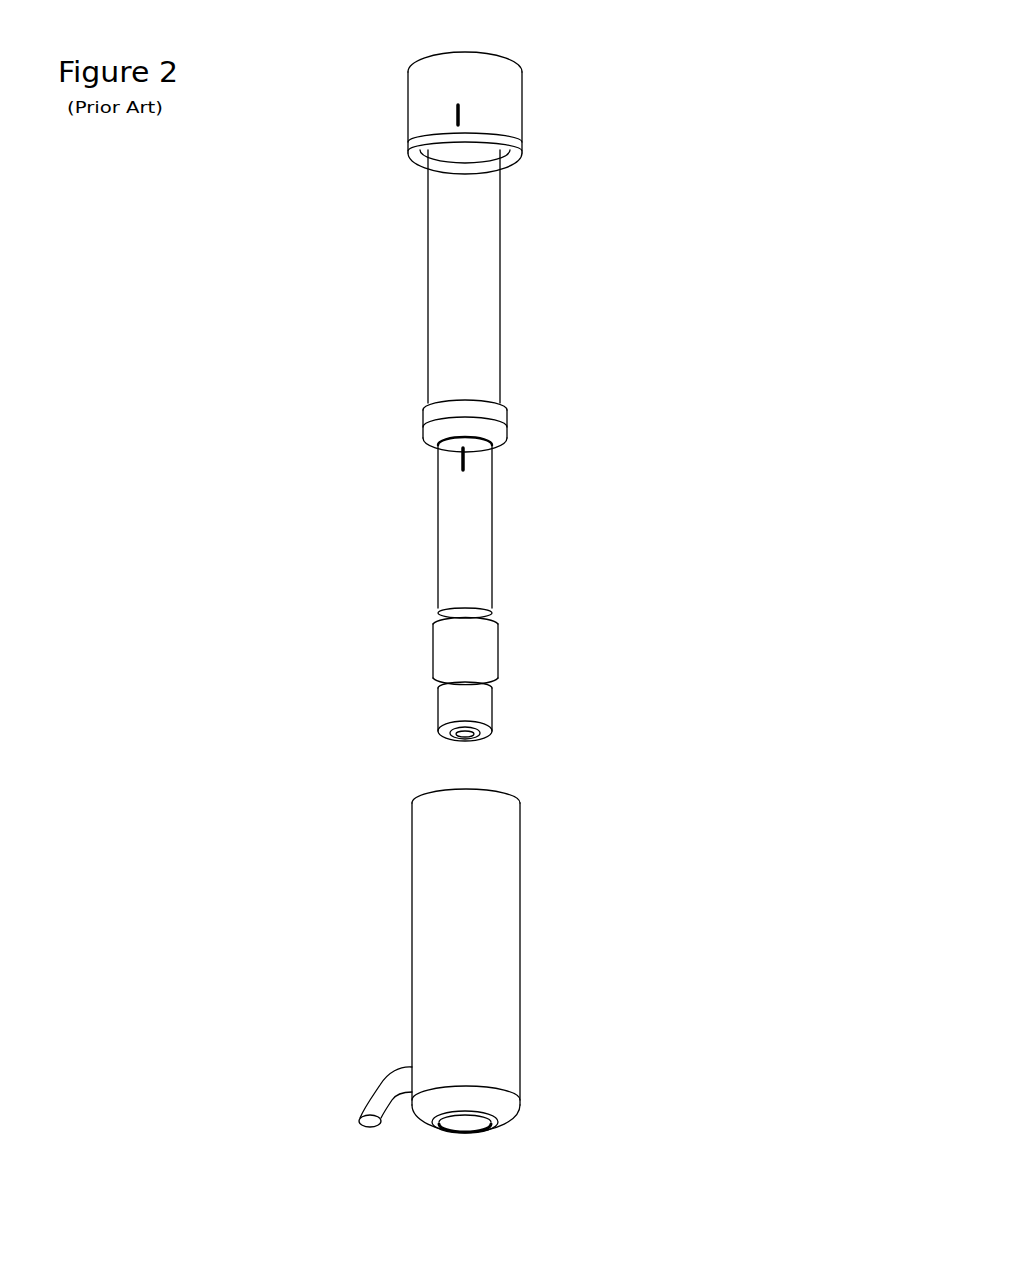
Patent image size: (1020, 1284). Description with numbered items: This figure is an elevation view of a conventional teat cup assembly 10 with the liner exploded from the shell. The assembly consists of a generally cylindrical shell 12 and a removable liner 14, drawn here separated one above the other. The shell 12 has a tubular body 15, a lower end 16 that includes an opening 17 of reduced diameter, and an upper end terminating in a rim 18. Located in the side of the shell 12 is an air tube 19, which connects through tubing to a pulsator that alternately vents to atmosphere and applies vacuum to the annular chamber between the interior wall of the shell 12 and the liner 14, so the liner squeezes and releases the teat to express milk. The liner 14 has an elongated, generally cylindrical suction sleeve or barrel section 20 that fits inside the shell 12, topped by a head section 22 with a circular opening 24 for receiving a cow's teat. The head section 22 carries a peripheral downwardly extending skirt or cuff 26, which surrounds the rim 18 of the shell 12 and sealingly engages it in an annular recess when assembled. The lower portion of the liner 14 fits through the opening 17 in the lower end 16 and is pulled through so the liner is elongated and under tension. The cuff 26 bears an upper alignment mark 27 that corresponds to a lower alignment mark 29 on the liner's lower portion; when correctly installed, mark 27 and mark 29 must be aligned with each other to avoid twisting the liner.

The teat cup assembly 10 is at (756, 313).
The shell 12 is at (666, 1032).
The liner 14 is at (432, 532).
The tubular body 15 is at (443, 972).
The lower end 16 is at (498, 1115).
The opening 17 is at (470, 1130).
The rim 18 is at (483, 790).
The air tube 19 is at (380, 1083).
The barrel section 20 is at (455, 352).
The head section 22 is at (405, 100).
The circular opening 24 is at (462, 52).
The cuff 26 is at (428, 131).
The upper alignment mark 27 is at (462, 116).
The lower alignment mark 29 is at (468, 459).